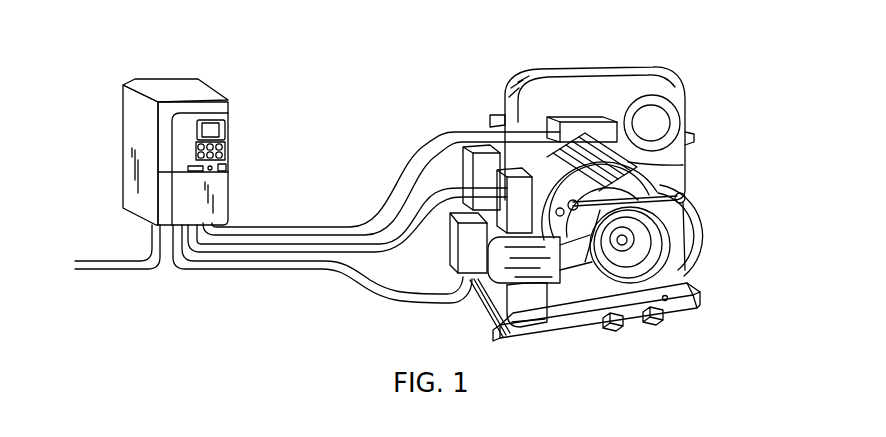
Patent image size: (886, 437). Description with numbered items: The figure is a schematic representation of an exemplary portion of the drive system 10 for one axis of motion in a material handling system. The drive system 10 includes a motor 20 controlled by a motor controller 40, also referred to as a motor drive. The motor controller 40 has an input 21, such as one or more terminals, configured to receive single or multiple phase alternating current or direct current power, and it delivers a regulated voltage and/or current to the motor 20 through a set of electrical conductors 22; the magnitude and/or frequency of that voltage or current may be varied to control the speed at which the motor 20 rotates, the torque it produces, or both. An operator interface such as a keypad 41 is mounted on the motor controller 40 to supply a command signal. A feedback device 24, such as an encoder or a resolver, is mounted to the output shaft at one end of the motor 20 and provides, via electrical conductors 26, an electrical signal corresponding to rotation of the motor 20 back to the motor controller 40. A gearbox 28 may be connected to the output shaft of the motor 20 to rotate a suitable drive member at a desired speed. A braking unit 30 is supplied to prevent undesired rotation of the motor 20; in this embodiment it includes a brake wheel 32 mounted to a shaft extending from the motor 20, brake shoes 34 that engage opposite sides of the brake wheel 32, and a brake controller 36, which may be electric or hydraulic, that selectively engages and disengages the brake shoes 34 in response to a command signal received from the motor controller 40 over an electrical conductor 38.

The drive system 10 is at (358, 70).
The motor 20 is at (675, 163).
The input 21 is at (110, 271).
The electrical conductors 22 is at (382, 243).
The feedback device 24 is at (588, 102).
The electrical conductors 26 is at (290, 225).
The gearbox 28 is at (677, 98).
The braking unit 30 is at (703, 216).
The brake wheel 32 is at (628, 264).
The brake shoes 34 is at (673, 240).
The brake controller 36 is at (441, 266).
The electrical conductor 38 is at (265, 270).
The motor controller 40 is at (145, 132).
The keypad 41 is at (222, 128).